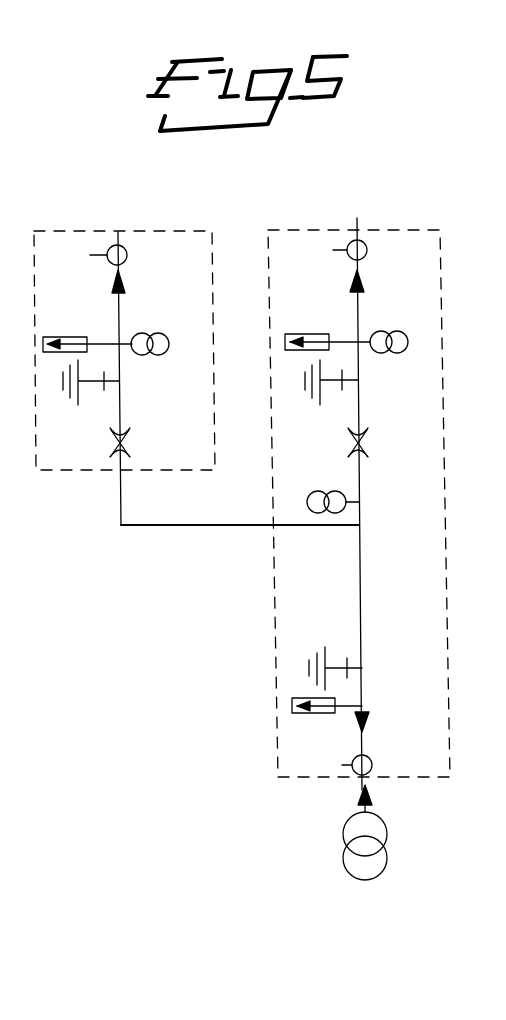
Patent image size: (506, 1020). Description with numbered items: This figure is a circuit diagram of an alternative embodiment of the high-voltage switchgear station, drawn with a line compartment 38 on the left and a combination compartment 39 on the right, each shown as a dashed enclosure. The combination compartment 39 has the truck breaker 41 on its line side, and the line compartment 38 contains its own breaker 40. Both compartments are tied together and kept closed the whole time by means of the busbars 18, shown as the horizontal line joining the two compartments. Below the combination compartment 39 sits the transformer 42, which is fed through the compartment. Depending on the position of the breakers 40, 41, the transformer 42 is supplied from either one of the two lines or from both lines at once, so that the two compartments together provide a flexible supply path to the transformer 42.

The busbar 18 is at (198, 526).
The line compartment 38 is at (124, 350).
The combination compartment 39 is at (375, 480).
The breaker 40 is at (114, 446).
The truck breaker 41 is at (368, 444).
The transformer 42 is at (378, 864).